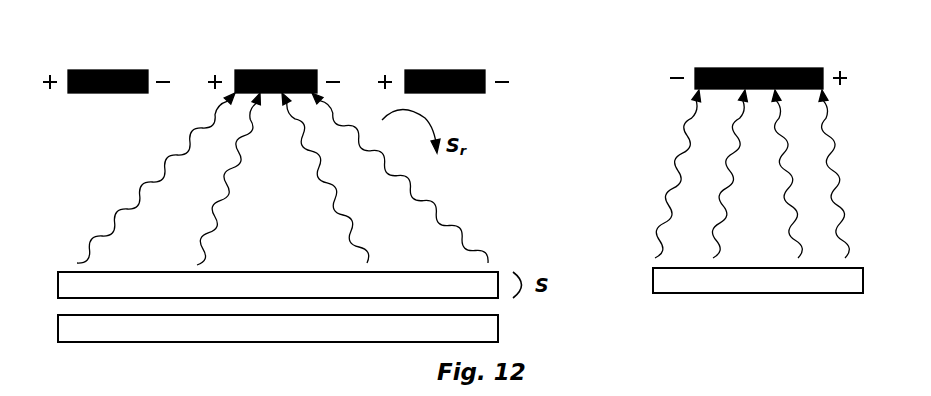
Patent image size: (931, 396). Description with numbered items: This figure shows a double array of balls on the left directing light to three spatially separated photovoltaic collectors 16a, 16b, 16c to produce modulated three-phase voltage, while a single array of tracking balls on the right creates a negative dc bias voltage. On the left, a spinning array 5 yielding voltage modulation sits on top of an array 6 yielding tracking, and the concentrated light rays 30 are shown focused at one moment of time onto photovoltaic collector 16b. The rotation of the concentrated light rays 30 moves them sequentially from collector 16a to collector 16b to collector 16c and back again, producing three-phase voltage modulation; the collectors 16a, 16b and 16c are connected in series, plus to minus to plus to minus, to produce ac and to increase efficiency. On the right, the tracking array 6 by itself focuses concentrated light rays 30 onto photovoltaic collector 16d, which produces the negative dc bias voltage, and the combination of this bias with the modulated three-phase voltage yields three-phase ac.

The photovoltaic collector 16a is at (128, 70).
The photovoltaic collector 16b is at (297, 70).
The photovoltaic collector 16c is at (465, 70).
The photovoltaic collector 16d is at (755, 68).
The concentrated light rays 30 is at (148, 173).
The spinning array 5 is at (42, 297).
The tracking array 6 is at (42, 341).